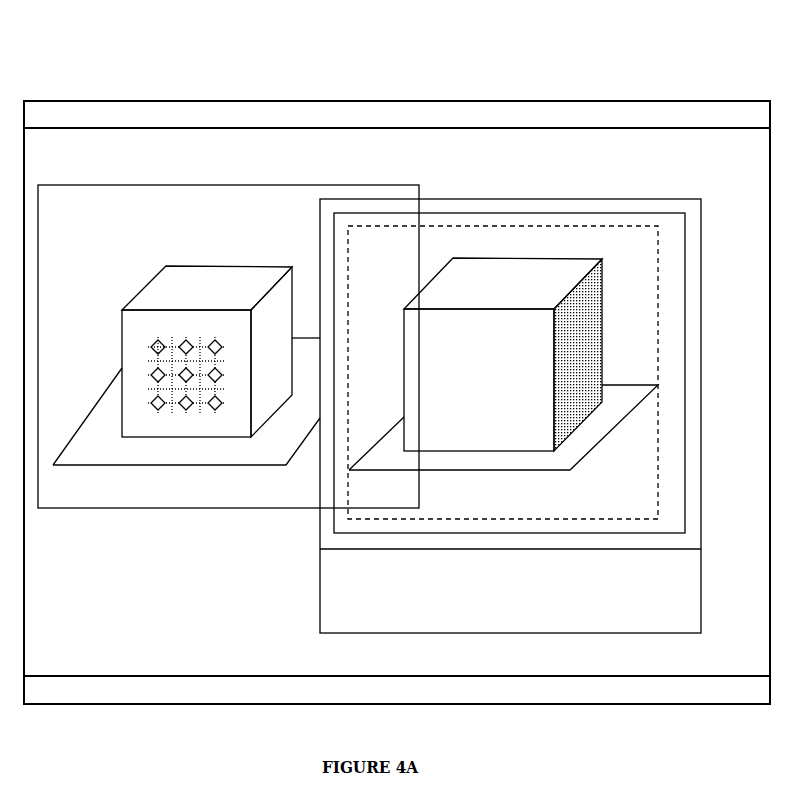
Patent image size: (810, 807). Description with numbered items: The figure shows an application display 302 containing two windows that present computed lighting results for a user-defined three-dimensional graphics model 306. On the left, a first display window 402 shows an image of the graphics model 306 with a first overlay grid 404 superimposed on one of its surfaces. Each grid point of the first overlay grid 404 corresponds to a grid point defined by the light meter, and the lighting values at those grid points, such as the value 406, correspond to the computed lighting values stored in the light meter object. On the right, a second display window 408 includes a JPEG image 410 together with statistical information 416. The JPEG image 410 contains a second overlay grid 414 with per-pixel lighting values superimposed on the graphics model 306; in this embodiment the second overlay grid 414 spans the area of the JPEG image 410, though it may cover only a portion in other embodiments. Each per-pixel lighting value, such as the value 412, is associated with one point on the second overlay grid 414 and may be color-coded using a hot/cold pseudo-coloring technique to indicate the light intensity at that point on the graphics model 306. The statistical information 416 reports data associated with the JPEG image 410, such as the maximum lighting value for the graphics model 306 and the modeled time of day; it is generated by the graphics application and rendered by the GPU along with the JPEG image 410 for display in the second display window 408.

The application display 302 is at (190, 101).
The 3-D graphics model 306 is at (150, 278).
The first display window 402 is at (193, 185).
The first overlay grid 404 is at (160, 342).
The lighting value 406 is at (187, 374).
The second display window 408 is at (447, 199).
The JPEG image 410 is at (602, 212).
The per-pixel lighting value 412 is at (580, 348).
The second overlay grid 414 is at (658, 435).
The statistical information 416 is at (320, 603).